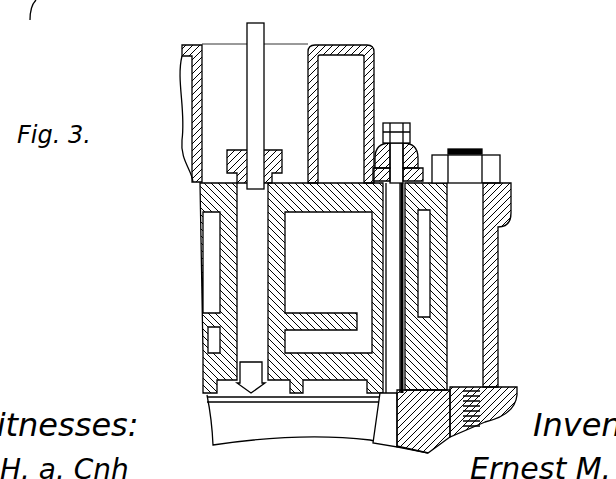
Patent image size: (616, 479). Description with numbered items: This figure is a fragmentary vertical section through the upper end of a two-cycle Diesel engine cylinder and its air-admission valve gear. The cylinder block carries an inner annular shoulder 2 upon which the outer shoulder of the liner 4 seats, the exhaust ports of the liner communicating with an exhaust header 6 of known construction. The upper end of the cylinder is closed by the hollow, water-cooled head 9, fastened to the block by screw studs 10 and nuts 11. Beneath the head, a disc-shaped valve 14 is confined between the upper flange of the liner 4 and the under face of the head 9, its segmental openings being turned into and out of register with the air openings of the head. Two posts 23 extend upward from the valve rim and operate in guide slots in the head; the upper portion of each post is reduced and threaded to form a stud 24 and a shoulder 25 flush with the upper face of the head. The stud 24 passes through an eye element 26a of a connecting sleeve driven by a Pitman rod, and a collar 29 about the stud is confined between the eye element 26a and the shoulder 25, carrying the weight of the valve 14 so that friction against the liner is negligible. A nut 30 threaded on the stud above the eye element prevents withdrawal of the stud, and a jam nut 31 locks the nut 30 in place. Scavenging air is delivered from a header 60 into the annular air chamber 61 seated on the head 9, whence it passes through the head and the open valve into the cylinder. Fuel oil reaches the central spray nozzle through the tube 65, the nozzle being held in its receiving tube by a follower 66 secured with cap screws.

The inner annular shoulder 2 is at (428, 453).
The liner 4 is at (398, 448).
The exhaust header 6 is at (30, 21).
The head 9 is at (447, 213).
The screw studs 10 is at (467, 274).
The nuts 11 is at (500, 177).
The valve 14 is at (388, 398).
The posts 23 is at (400, 253).
The stud 24 is at (413, 144).
The shoulder 25 is at (392, 182).
The eye element 26a is at (425, 180).
The collar 29 is at (477, 157).
The nut 30 is at (418, 138).
The jam nut 31 is at (407, 125).
The header 60 is at (166, 0).
The air chamber 61 is at (355, 45).
The tube 65 is at (261, 44).
The follower 66 is at (273, 150).